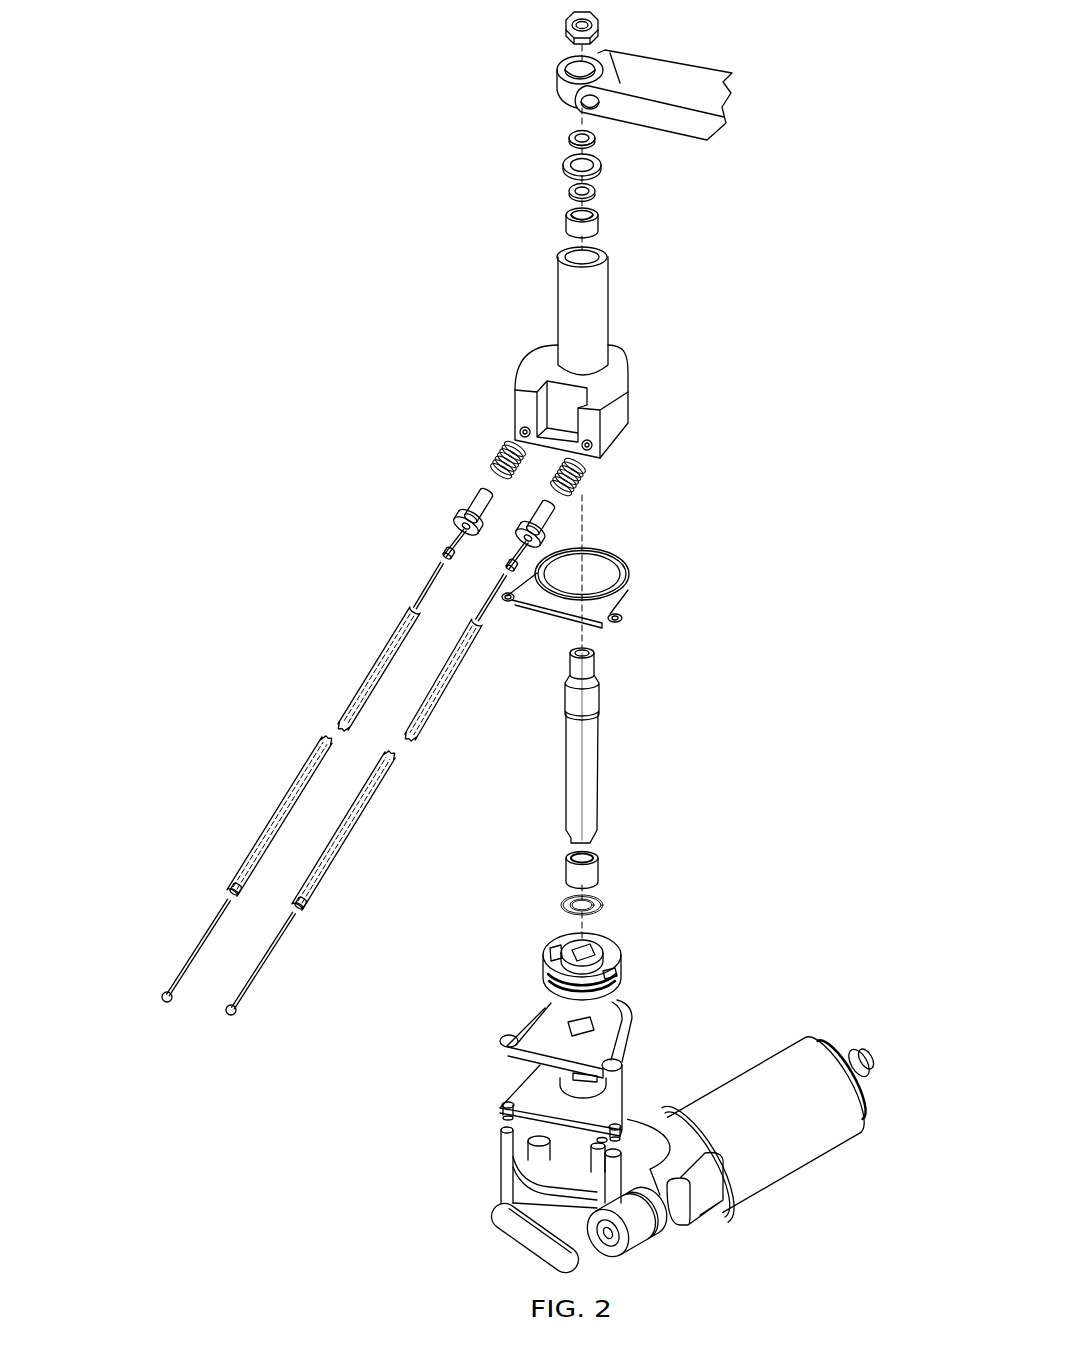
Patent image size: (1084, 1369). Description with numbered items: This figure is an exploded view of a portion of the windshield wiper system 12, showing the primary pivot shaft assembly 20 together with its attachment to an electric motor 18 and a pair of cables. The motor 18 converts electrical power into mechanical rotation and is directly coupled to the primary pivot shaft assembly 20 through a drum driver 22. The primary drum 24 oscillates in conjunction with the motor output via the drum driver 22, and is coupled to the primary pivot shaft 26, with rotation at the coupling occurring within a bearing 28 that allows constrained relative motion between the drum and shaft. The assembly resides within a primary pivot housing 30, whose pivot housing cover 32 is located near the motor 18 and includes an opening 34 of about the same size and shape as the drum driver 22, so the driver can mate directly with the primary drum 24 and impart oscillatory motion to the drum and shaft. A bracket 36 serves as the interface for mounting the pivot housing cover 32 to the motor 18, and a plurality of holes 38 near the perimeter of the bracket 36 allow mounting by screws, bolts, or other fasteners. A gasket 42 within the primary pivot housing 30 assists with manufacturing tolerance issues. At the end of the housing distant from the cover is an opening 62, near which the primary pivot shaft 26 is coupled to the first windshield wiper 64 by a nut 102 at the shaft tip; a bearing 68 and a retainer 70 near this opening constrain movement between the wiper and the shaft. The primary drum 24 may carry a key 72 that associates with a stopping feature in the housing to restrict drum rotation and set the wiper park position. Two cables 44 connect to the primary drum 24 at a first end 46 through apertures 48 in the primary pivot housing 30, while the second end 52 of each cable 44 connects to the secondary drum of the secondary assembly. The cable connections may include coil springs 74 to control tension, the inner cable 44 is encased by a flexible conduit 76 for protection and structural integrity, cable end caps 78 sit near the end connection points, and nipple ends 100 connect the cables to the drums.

The windshield wiper system 12 is at (405, 332).
The electric motor 18 is at (807, 1142).
The primary pivot shaft assembly 20 is at (642, 147).
The drum driver 22 is at (597, 1098).
The primary drum 24 is at (548, 950).
The primary pivot shaft 26 is at (582, 767).
The bearing 28 is at (570, 857).
The primary pivot housing 30 is at (583, 320).
The pivot housing cover 32 is at (542, 1033).
The opening 34 is at (627, 1008).
The bracket 36 is at (527, 1097).
The holes 38 is at (500, 1102).
The gasket 42 is at (603, 550).
The cable 44 is at (260, 962).
The first end 46 is at (477, 620).
The apertures 48 is at (524, 438).
The second end 52 is at (293, 907).
The opening 62 is at (580, 262).
The first windshield wiper 64 is at (557, 64).
The bearing 68 is at (569, 216).
The retainer 70 is at (606, 134).
The key 72 is at (593, 930).
The coil springs 74 is at (497, 470).
The flexible conduit 76 is at (347, 813).
The cable end caps 78 is at (530, 527).
The nipple ends 100 is at (510, 567).
The nut 102 is at (600, 18).